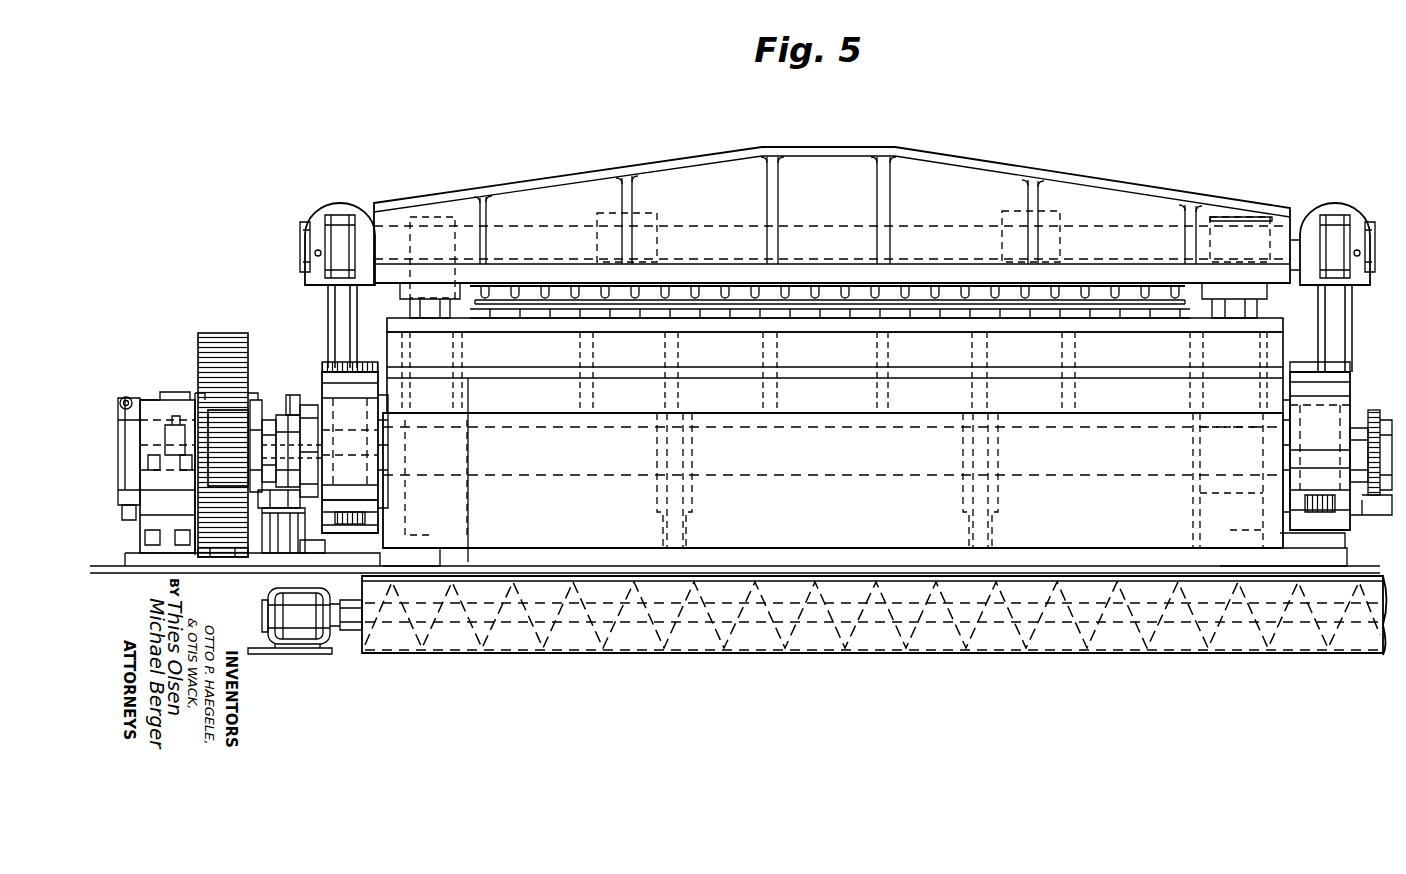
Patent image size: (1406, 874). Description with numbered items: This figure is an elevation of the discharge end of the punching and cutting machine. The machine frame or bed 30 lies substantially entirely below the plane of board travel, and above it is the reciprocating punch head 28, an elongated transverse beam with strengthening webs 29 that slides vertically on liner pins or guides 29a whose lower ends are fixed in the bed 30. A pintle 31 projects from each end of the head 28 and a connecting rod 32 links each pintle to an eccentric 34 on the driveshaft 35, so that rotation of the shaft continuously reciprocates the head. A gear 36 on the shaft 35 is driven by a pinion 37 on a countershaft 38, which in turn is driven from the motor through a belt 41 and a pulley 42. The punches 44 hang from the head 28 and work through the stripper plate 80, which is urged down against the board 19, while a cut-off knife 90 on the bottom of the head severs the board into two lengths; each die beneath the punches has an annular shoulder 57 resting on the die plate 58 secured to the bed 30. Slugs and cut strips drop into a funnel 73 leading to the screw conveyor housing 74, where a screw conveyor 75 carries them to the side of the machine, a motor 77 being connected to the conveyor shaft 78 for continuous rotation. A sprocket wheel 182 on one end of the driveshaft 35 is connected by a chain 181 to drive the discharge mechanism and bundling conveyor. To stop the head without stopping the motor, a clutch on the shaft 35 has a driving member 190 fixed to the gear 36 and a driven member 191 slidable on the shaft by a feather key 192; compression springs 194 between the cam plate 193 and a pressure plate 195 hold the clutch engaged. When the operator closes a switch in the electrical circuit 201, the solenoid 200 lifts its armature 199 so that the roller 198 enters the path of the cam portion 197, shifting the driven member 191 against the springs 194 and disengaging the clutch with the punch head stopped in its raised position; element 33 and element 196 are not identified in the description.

The board 19 is at (1128, 302).
The reciprocating punch head 28 is at (930, 272).
The strengthening webs 29 is at (885, 203).
The liner pins or guides 29a is at (1262, 310).
The frame or bed 30 is at (1282, 348).
The pintle 31 is at (554, 226).
The connecting rod 32 is at (1323, 320).
The right gear housing 33 is at (1353, 392).
The eccentric 34 is at (1351, 483).
The driveshaft 35 is at (613, 478).
The gear 36 is at (222, 338).
The pinion 37 is at (212, 462).
The countershaft 38 is at (262, 450).
The belt 41 is at (343, 366).
The pulley 42 is at (350, 440).
The punches 44 is at (478, 283).
The annular shoulder 57 is at (639, 310).
The die plate 58 is at (547, 316).
The funnel 73 is at (470, 526).
The screw conveyor housing 74 is at (505, 655).
The screw conveyor 75 is at (548, 640).
The motor 77 is at (295, 626).
The shaft 78 is at (326, 628).
The stripper plate 80 is at (804, 290).
The cut-off knife 90 is at (836, 288).
The chain 181 is at (1382, 500).
The sprocket wheel 182 is at (1385, 420).
The driving member 190 is at (258, 404).
The driven member 191 is at (285, 420).
The feather key 192 is at (279, 418).
The cam plate 193 is at (301, 424).
The compression springs 194 is at (295, 490).
The pressure plate 195 is at (309, 440).
The base block 196 is at (238, 546).
The cam portion 197 is at (270, 532).
The roller 198 is at (257, 548).
The solenoid armature 199 is at (262, 592).
The solenoid 200 is at (276, 632).
The electrical circuit 201 is at (318, 536).